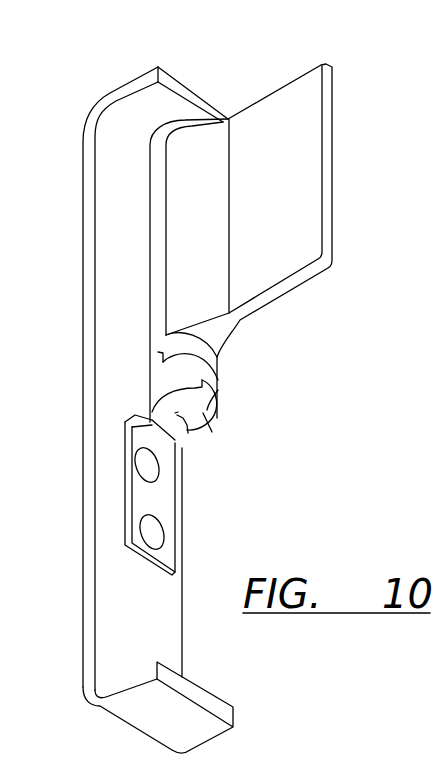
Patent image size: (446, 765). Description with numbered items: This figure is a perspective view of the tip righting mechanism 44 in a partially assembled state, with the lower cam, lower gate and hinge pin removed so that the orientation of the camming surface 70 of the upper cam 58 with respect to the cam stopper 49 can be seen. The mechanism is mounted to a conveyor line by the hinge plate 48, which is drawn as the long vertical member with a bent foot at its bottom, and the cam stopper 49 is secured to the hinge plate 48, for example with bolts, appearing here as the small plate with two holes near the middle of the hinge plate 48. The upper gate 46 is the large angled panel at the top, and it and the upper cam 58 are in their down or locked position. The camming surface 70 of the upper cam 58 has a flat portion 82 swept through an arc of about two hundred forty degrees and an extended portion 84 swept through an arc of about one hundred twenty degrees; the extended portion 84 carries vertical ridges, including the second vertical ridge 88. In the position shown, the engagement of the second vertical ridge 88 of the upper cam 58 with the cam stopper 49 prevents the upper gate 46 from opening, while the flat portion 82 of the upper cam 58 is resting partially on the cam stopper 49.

The tip righting mechanism 44 is at (278, 313).
The upper gate 46 is at (290, 201).
The hinge plate 48 is at (151, 612).
The cam stopper 49 is at (170, 450).
The upper cam 58 is at (196, 381).
The camming surface 70 is at (207, 440).
The flat portion 82 is at (203, 416).
The extended portion 84 is at (172, 404).
The second vertical ridge 88 is at (165, 418).